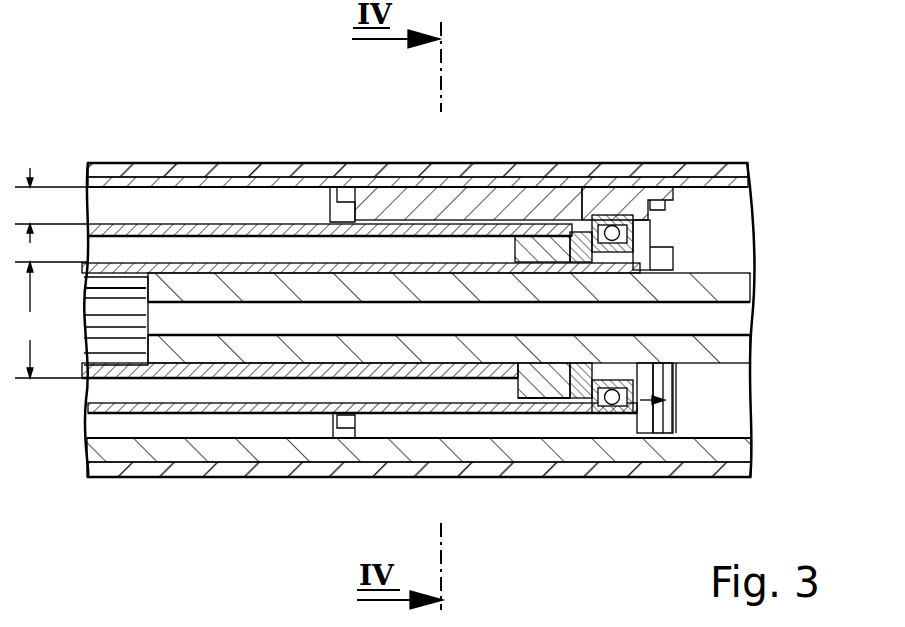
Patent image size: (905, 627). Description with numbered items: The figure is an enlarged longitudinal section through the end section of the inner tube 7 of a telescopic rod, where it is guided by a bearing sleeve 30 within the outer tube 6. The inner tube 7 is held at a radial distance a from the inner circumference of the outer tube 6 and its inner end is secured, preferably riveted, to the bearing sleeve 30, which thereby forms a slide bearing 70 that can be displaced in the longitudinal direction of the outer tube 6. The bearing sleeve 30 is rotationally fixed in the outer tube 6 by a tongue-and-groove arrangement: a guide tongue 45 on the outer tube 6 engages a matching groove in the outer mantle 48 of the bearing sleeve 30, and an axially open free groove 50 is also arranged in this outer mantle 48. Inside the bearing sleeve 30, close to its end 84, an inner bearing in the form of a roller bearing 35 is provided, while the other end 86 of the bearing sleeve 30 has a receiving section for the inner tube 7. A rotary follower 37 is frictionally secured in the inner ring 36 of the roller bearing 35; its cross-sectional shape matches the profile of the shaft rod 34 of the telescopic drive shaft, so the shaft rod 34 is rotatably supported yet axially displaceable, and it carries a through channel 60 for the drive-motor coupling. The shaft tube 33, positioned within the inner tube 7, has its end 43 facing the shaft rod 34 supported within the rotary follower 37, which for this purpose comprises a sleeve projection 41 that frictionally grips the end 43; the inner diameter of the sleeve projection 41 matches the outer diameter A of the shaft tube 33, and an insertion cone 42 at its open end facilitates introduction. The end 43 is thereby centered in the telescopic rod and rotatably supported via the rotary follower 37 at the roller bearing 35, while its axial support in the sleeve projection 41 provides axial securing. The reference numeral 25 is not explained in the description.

The outer housing 25 is at (106, 170).
The outer tube 6 is at (177, 183).
The inner tube 7 is at (243, 232).
The outer mantle 48 is at (370, 186).
The shaft rod 34 is at (388, 283).
The bearing sleeve 30 is at (457, 198).
The end of the shaft tube 43 is at (582, 215).
The slide bearing 70 is at (622, 188).
The end of the bearing sleeve 84 is at (683, 210).
The free groove 50 is at (663, 235).
The through channel 60 is at (748, 318).
The rotary follower 37 is at (673, 377).
The inner ring 36 is at (673, 407).
The roller bearing 35 is at (660, 404).
The shaft tube 33 is at (110, 372).
The guide tongue 45 is at (107, 436).
The other end of the bearing sleeve 86 is at (312, 424).
The insertion cone 42 is at (548, 400).
The sleeve projection 41 is at (572, 406).
The radial distance a is at (51, 205).
The outer diameter A is at (51, 320).